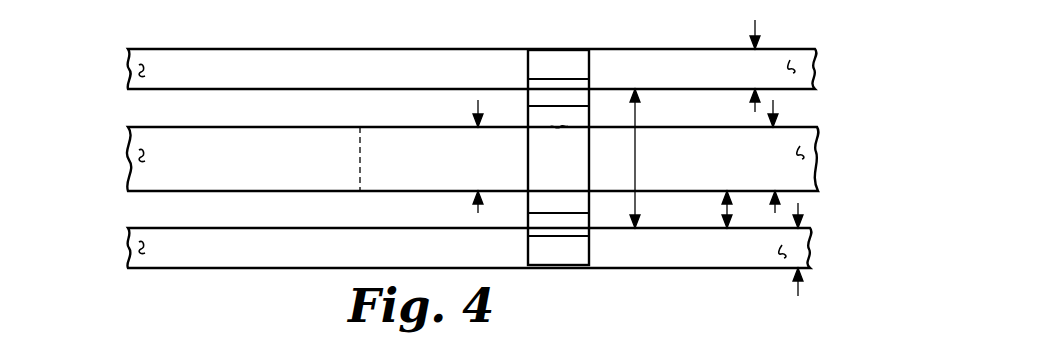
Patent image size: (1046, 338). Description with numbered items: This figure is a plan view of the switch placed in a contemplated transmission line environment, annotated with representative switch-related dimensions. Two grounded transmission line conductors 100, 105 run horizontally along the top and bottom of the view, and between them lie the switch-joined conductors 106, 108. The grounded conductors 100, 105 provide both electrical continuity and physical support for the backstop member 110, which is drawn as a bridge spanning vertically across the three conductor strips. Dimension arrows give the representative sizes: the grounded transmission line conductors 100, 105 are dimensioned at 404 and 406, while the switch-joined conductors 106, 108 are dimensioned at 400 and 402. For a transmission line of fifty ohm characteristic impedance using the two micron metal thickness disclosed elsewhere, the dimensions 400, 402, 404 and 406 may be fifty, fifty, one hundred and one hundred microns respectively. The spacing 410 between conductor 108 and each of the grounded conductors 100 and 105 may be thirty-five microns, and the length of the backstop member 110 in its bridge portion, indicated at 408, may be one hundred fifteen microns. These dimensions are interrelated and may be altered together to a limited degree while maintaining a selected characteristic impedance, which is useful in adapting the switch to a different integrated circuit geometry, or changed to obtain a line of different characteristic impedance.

The grounded transmission line conductor 100 is at (132, 66).
The grounded transmission line conductor 105 is at (132, 239).
The switch-joined conductor 106 is at (132, 156).
The switch-joined conductor 108 is at (806, 150).
The backstop member 110 is at (557, 122).
The switch-joined conductor dimension 400 is at (463, 153).
The switch-joined conductor dimension 402 is at (776, 106).
The grounded transmission line conductor dimension 404 is at (803, 210).
The grounded transmission line conductor dimension 406 is at (759, 29).
The backstop member bridge portion length dimension 408 is at (635, 115).
The spacing 410 is at (726, 209).